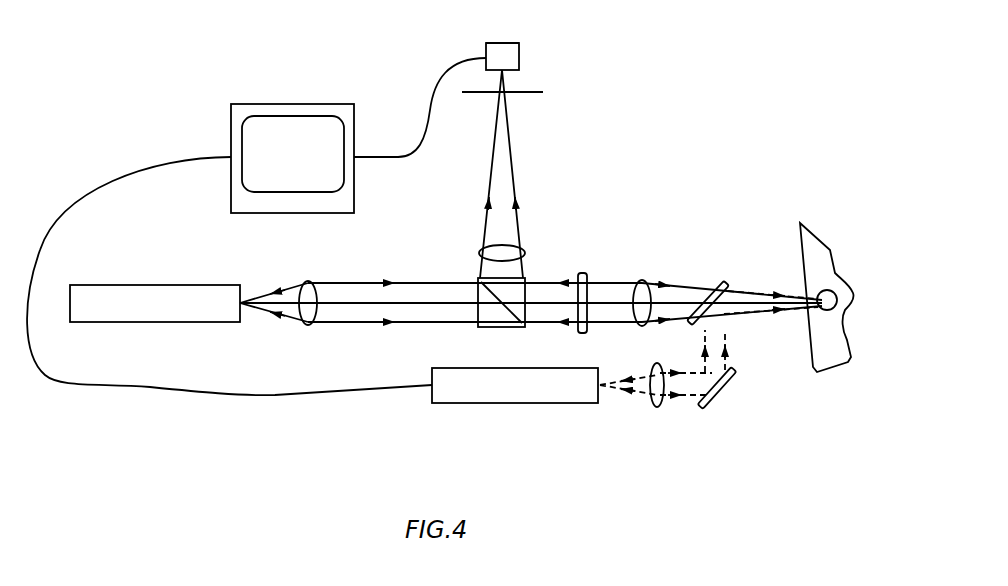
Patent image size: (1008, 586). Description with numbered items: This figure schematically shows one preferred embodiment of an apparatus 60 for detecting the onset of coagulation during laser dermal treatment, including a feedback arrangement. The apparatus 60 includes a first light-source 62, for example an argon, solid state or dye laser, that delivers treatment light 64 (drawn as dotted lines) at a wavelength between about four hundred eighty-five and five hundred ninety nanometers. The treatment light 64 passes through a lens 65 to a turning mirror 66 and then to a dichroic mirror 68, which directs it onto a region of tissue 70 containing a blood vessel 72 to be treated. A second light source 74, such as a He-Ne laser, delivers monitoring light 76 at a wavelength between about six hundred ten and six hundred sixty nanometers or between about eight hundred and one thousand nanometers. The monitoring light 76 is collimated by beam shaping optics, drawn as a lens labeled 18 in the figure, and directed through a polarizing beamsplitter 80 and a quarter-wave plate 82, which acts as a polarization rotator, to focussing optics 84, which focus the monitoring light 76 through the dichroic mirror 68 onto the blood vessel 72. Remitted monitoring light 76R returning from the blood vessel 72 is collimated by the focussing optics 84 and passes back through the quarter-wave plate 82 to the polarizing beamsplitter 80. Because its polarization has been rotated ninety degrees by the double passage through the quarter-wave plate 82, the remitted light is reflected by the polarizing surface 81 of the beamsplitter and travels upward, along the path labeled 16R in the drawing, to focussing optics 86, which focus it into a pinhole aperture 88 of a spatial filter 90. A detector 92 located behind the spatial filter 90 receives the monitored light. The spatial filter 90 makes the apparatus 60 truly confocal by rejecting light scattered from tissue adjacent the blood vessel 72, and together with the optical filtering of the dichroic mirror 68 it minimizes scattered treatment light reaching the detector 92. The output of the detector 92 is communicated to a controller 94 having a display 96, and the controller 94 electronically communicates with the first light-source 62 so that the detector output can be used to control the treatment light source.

The reflected light beam 16R is at (512, 155).
The focusing lens 18 is at (311, 329).
The apparatus 60 is at (672, 124).
The first light-source 62 is at (504, 404).
The treatment light 64 is at (628, 396).
The lens 65 is at (662, 405).
The turning mirror 66 is at (733, 388).
The dichroic mirror 68 is at (720, 287).
The region of tissue 70 is at (798, 269).
The blood vessel 72 is at (845, 292).
The second light source 74 is at (192, 284).
The monitoring light 76 is at (272, 318).
The remitted monitoring light 76R is at (548, 272).
The polarizing beamsplitter 80 is at (475, 333).
The polarizing surface 81 is at (490, 297).
The quarter-wave plate 82 is at (586, 273).
The focussing optics 84 is at (643, 278).
The focussing optics 86 is at (477, 249).
The pinhole aperture 88 is at (506, 95).
The spatial filter 90 is at (535, 87).
The detector 92 is at (500, 43).
The controller 94 is at (340, 101).
The display 96 is at (290, 126).